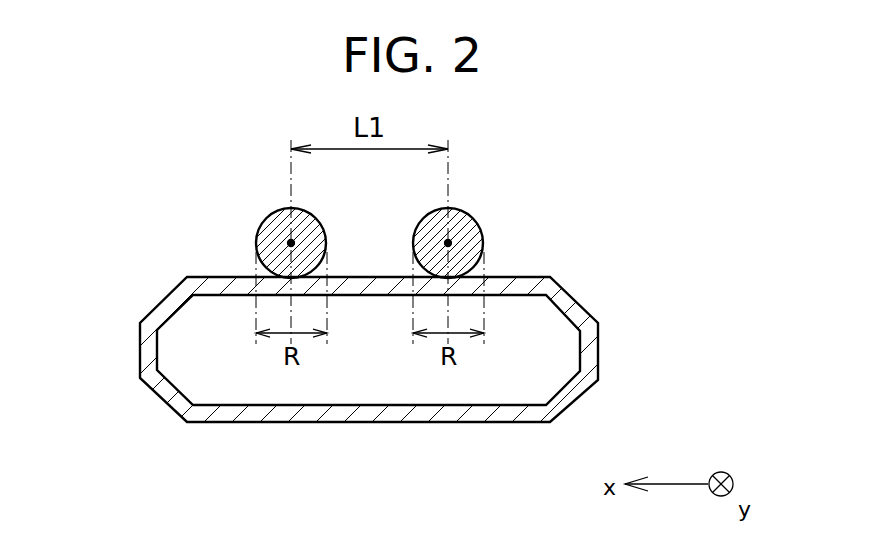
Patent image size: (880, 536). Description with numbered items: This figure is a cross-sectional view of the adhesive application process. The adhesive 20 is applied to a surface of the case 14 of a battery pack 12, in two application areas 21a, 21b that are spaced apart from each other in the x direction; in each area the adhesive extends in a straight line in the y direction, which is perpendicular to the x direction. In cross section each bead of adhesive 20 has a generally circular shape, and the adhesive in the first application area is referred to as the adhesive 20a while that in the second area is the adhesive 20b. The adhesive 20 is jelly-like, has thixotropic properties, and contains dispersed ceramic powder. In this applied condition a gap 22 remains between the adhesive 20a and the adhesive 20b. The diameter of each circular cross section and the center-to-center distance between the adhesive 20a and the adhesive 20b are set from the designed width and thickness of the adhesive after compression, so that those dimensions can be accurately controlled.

The battery pack 12 is at (388, 360).
The case 14 is at (590, 350).
The adhesive 20 is at (370, 240).
The adhesive 20a is at (268, 225).
The adhesive 20b is at (476, 222).
The application area 21a is at (271, 197).
The application area 21b is at (468, 197).
The gap 22 is at (370, 242).